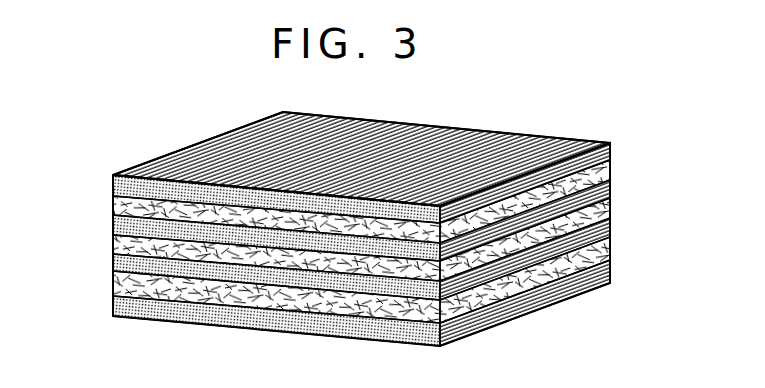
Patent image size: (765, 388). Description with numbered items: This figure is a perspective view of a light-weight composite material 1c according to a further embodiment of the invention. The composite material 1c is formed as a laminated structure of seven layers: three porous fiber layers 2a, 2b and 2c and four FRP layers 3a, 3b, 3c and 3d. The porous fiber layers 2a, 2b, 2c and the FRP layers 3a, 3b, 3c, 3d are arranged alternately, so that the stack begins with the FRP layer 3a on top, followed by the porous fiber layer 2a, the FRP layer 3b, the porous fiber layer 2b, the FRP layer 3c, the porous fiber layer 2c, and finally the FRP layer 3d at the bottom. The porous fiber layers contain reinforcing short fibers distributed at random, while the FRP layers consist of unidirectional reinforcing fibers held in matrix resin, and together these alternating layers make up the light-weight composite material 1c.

The composite material 1c is at (616, 173).
The FRP layer 3a is at (105, 180).
The porous fiber layer 2a is at (107, 200).
The FRP layer 3b is at (107, 218).
The porous fiber layer 2b is at (108, 237).
The FRP layer 3c is at (107, 257).
The porous fiber layer 2c is at (107, 283).
The FRP layer 3d is at (110, 307).